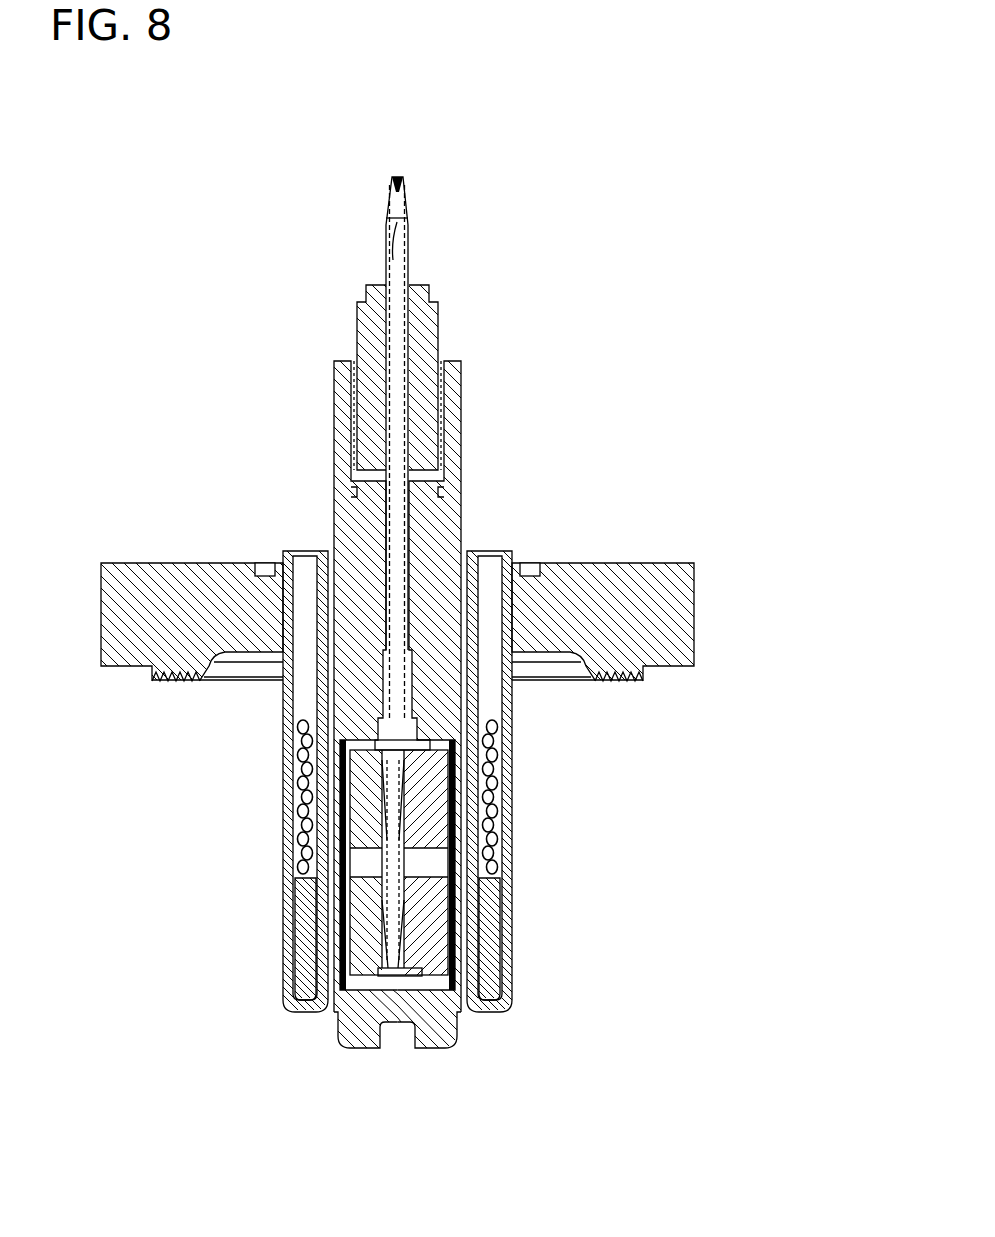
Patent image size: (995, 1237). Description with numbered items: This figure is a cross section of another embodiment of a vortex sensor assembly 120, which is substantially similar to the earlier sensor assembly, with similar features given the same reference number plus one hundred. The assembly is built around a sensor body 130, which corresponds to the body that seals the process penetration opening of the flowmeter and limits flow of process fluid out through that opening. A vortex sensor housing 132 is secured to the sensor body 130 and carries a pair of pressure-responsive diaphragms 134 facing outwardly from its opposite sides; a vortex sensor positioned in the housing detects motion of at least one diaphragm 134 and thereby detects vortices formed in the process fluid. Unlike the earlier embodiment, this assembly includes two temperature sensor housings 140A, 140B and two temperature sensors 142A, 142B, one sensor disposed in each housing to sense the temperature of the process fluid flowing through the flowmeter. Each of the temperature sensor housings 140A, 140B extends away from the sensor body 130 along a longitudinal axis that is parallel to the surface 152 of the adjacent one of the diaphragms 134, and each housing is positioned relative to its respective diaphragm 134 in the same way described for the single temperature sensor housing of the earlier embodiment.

The vortex sensor assembly 120 is at (693, 233).
The sensor body 130 is at (695, 586).
The vortex sensor housing 132 is at (432, 1047).
The pressure-responsive diaphragm 134 is at (322, 826).
The temperature sensor housing 140A is at (283, 896).
The temperature sensor housing 140B is at (505, 965).
The temperature sensor 142A is at (296, 985).
The temperature sensor 142B is at (506, 985).
The surface of diaphragm 152 is at (337, 861).